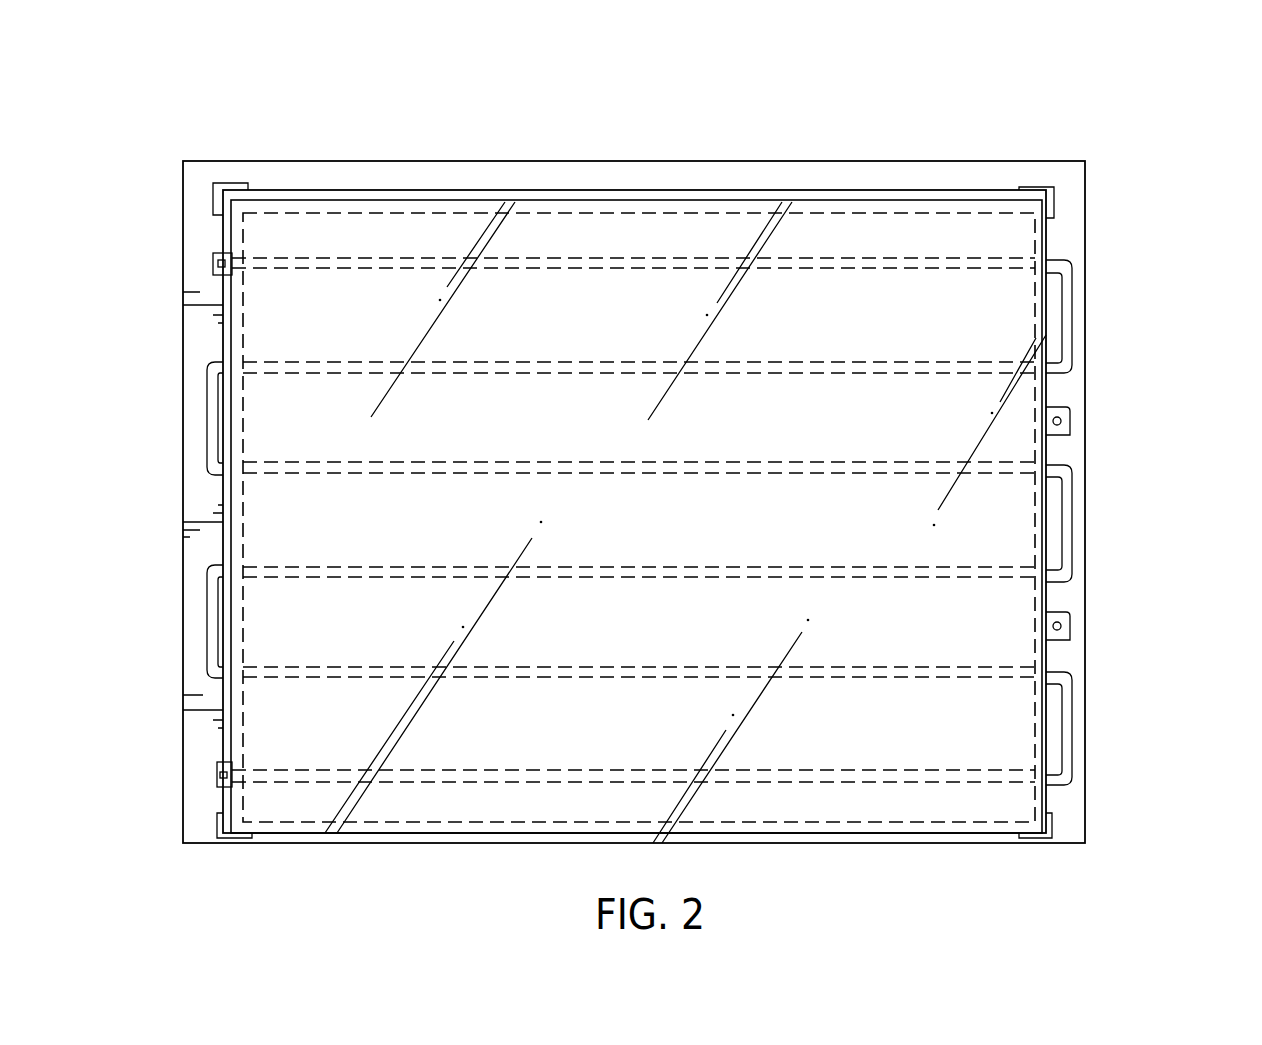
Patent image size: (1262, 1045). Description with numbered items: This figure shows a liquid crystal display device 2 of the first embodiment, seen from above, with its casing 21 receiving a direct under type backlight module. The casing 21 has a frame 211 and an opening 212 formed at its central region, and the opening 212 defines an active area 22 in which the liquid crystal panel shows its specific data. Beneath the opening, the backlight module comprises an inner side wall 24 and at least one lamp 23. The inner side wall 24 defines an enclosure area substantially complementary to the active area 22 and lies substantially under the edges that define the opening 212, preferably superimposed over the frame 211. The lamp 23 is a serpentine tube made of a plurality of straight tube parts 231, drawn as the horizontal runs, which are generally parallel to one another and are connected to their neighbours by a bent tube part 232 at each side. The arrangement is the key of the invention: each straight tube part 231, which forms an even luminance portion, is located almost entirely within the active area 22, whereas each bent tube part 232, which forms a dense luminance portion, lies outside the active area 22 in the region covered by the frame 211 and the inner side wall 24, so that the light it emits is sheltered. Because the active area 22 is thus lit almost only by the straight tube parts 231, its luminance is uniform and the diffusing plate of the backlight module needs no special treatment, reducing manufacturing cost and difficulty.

The liquid crystal display device 2 is at (162, 126).
The casing 21 is at (1060, 241).
The frame 211 is at (1078, 542).
The opening 212 is at (674, 240).
The active area 22 is at (816, 230).
The lamp 23 is at (556, 265).
The straight tube part 231 is at (415, 265).
The bent tube part 232 is at (1066, 320).
The inner side wall 24 is at (1040, 451).